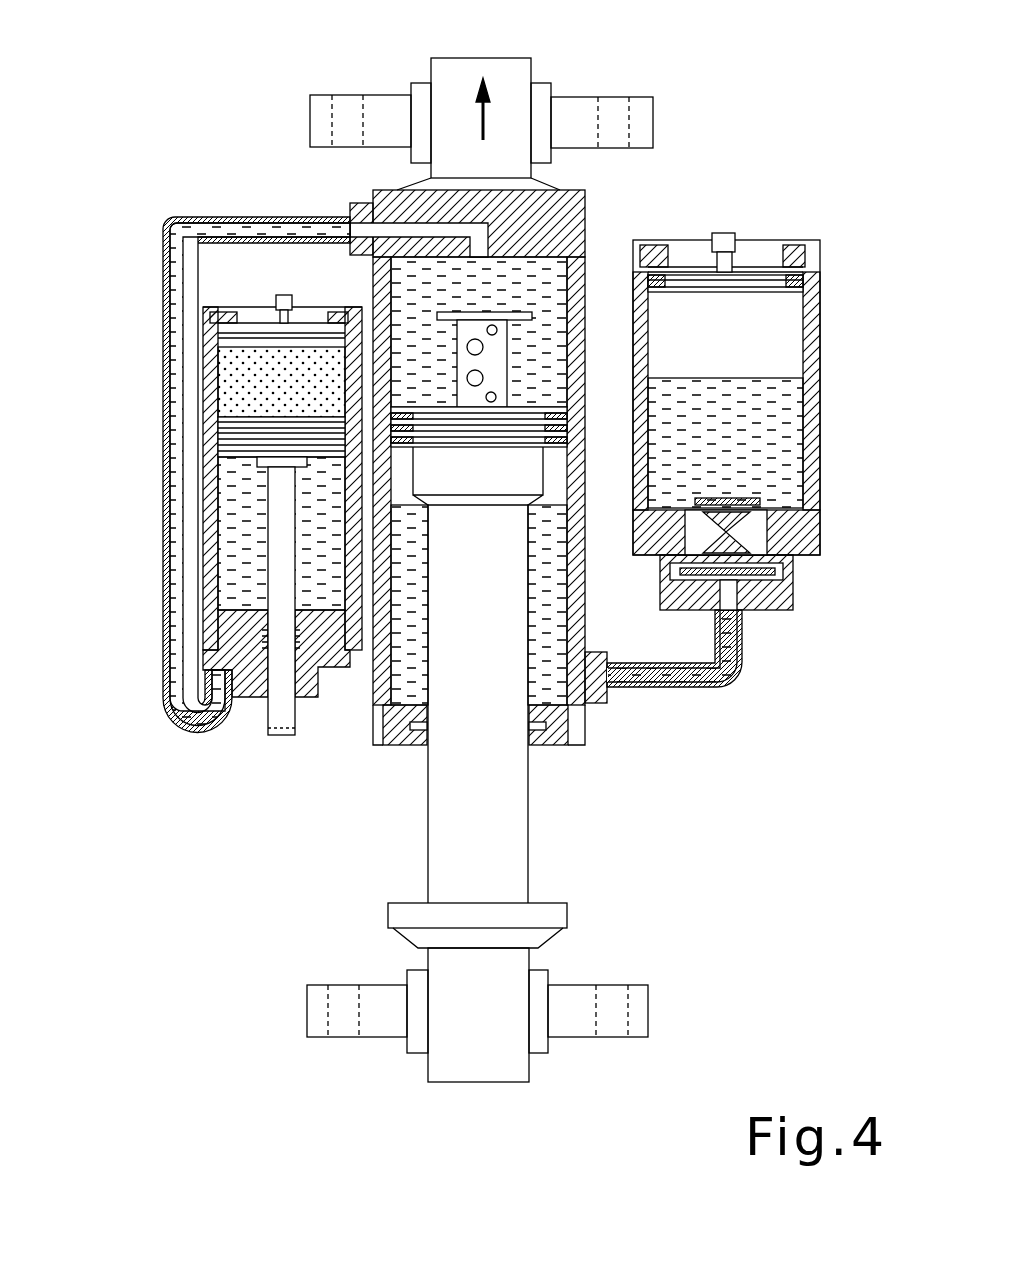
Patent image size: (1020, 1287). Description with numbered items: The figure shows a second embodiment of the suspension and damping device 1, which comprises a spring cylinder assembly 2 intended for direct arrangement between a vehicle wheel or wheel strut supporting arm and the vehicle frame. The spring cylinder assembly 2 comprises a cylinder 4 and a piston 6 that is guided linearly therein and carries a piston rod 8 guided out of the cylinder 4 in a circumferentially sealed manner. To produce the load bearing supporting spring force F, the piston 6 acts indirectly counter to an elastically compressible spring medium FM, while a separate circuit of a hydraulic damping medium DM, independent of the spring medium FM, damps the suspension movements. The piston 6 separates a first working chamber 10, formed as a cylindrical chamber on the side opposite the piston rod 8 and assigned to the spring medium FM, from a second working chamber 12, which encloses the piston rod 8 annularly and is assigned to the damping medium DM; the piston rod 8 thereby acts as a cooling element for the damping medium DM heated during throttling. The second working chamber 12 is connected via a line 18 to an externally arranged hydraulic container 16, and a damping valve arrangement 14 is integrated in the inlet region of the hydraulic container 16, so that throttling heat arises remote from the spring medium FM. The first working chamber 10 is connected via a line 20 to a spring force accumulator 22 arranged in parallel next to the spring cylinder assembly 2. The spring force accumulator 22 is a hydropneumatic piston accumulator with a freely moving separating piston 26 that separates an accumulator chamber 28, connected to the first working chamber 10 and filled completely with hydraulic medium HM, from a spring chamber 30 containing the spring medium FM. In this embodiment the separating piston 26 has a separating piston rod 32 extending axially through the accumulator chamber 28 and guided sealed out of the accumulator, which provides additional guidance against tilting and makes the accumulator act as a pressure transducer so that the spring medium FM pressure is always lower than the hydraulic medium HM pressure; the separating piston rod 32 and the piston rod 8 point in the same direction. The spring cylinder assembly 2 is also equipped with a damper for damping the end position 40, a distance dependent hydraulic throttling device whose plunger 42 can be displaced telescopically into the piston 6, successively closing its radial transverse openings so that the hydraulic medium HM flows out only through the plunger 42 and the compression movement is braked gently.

The suspension and damping device 1 is at (233, 112).
The spring cylinder assembly 2 is at (595, 208).
The cylinder 4 is at (575, 560).
The piston 6 is at (543, 410).
The piston rod 8 is at (493, 780).
The first working chamber 10 is at (453, 281).
The second working chamber 12 is at (552, 650).
The damping valve arrangement 14 is at (760, 585).
The hydraulic container 16 is at (813, 348).
The line 18 is at (717, 690).
The line 20 is at (163, 240).
The spring force accumulator 22 is at (250, 703).
The separating piston 26 is at (228, 437).
The accumulator chamber 28 is at (225, 578).
The spring chamber 30 is at (223, 383).
The separating piston rod 32 is at (282, 722).
The damper for damping the end position 40 is at (530, 337).
The plunger 42 is at (472, 400).
The supporting spring force F is at (492, 120).
The hydraulic medium HM is at (407, 293).
The damping medium DM is at (773, 447).
The spring medium FM is at (262, 362).